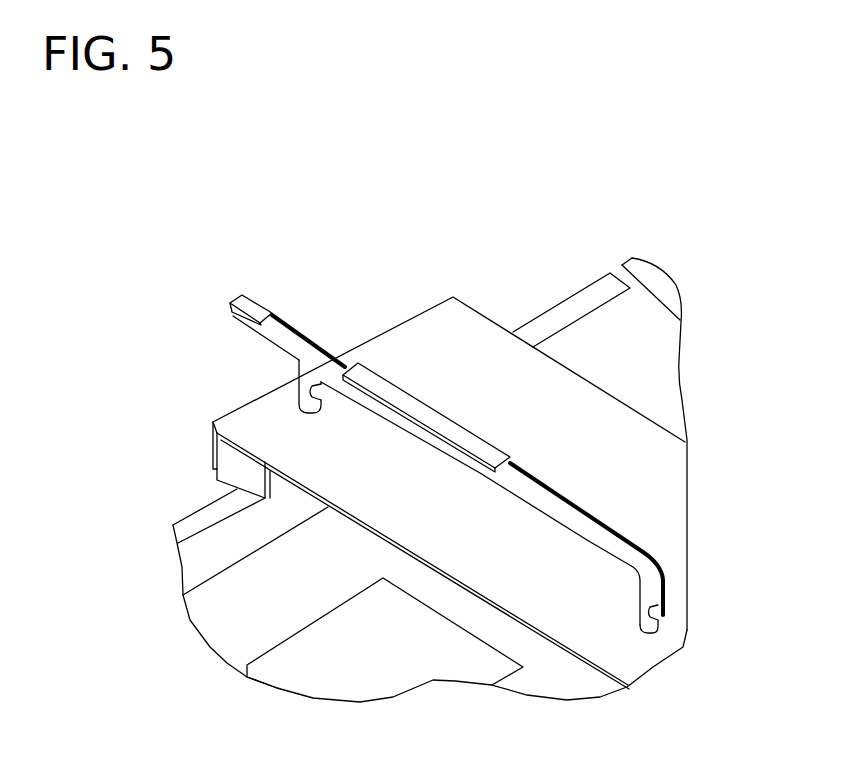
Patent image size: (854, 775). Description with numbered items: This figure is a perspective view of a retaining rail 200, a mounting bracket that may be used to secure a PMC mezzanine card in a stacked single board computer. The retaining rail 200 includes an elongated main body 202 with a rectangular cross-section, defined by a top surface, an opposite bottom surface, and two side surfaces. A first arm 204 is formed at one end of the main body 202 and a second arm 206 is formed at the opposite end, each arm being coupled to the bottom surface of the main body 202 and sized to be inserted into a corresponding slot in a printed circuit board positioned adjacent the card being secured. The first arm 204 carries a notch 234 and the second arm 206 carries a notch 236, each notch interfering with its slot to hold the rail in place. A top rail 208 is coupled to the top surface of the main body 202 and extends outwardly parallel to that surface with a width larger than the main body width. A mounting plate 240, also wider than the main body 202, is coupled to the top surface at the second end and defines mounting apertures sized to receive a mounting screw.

The retaining rail 200 is at (584, 137).
The main body 202 is at (538, 495).
The first arm 204 is at (632, 588).
The second arm 206 is at (293, 367).
The top rail 208 is at (412, 403).
The notch 234 is at (659, 622).
The notch 236 is at (322, 409).
The mounting plate 240 is at (237, 293).